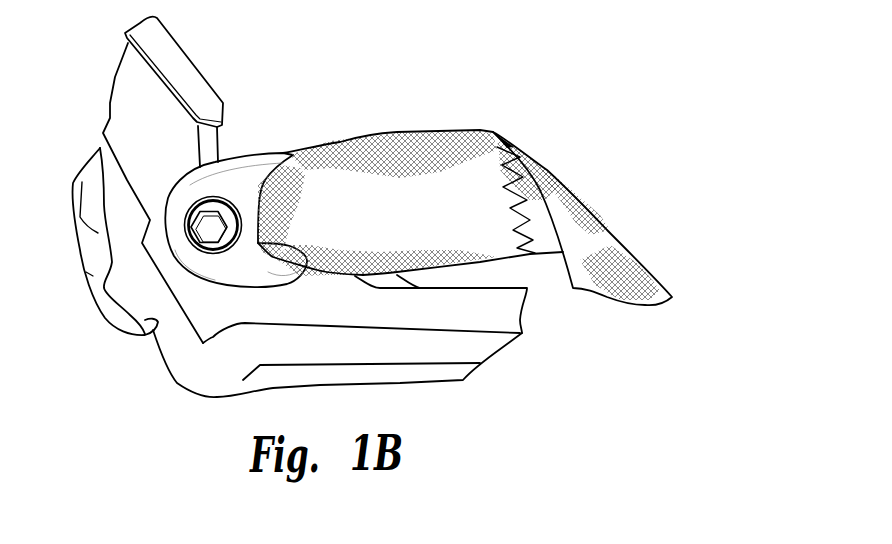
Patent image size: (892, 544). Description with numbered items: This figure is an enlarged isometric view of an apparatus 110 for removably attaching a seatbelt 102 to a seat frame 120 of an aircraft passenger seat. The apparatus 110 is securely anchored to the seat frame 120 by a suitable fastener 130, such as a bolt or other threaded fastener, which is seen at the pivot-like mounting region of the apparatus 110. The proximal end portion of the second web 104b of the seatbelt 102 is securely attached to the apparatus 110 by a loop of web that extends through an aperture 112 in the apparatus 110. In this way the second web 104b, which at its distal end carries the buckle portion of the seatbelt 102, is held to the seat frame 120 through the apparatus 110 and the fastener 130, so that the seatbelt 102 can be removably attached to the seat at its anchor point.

The seatbelt 102 is at (655, 265).
The second web 104b is at (470, 140).
The apparatus 110 is at (243, 157).
The aperture 112 is at (259, 246).
The seat frame 120 is at (203, 90).
The fastener 130 is at (205, 232).